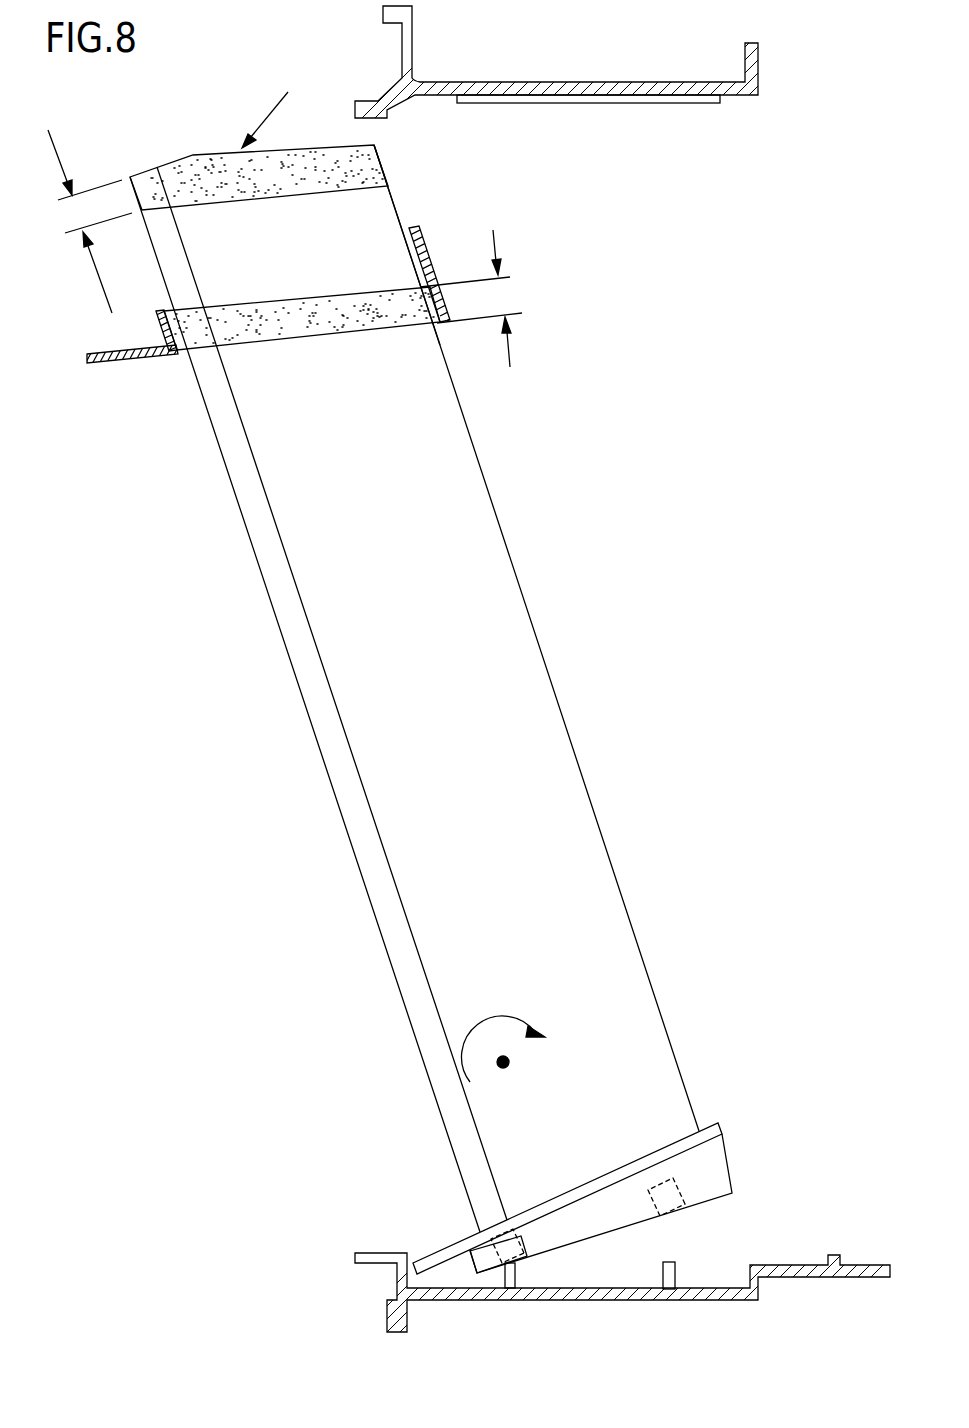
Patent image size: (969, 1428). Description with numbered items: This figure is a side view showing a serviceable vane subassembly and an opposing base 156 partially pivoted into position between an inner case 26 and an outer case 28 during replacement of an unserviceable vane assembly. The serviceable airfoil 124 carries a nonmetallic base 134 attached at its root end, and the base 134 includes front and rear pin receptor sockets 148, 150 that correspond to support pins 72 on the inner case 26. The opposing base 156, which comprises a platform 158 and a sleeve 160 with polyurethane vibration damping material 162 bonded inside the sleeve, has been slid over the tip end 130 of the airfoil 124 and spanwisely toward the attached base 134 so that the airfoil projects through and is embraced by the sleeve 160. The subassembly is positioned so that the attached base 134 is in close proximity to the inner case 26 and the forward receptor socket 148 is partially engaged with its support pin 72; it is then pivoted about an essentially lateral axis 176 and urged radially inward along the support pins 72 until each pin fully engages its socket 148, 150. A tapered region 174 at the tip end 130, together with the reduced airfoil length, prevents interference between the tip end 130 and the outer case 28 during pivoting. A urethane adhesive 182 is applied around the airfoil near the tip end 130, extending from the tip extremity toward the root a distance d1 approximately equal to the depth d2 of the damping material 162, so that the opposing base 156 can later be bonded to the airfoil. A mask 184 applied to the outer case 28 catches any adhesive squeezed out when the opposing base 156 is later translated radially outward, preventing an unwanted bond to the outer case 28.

The outer case 28 is at (537, 82).
The mask 184 is at (648, 103).
The serviceable airfoil 124 is at (510, 642).
The tip end 130 is at (382, 200).
The urethane adhesive 182 is at (172, 177).
The tapered region 174 is at (279, 105).
The distance of adhesive extension d1 is at (90, 221).
The depth of damping material d2 is at (471, 298).
The polyurethane vibration damping material 162 is at (343, 294).
The sleeve 160 is at (418, 233).
The opposing base 156 is at (158, 333).
The platform 158 is at (135, 363).
The lateral axis 176 is at (508, 1068).
The nonmetallic base 134 is at (722, 1158).
The front pin receptor socket 148 is at (524, 1237).
The rear pin receptor socket 150 is at (672, 1207).
The support pin 72 is at (512, 1280).
The inner case 26 is at (600, 1300).